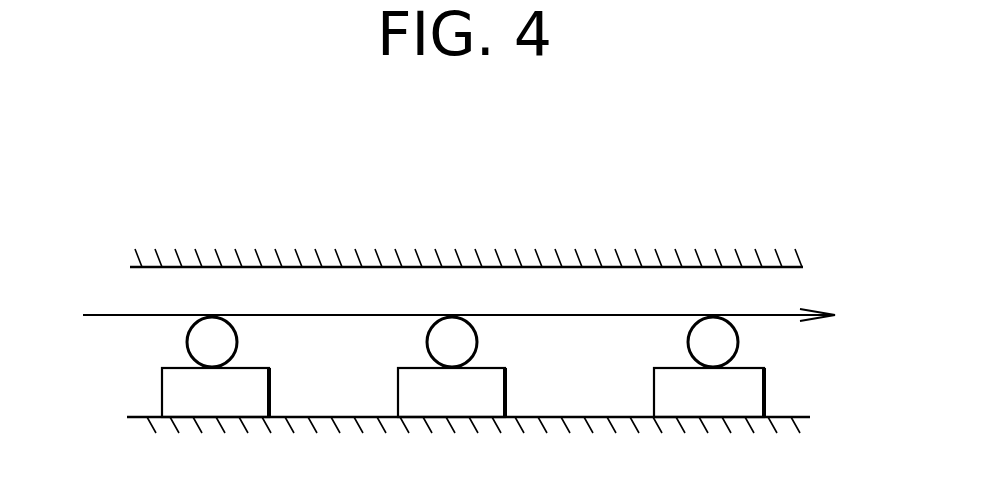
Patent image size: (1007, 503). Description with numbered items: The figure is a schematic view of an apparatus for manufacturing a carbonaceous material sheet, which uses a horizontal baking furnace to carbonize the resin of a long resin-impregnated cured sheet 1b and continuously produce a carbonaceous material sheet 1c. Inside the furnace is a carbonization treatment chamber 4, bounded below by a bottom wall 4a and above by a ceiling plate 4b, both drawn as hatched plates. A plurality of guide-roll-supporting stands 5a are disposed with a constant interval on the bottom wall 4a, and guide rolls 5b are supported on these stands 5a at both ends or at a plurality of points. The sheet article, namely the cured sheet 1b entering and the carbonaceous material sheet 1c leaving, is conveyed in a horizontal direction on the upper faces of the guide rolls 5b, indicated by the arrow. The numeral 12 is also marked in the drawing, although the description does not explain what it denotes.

The long resin-impregnated cured sheet 1b is at (120, 315).
The carbonaceous material sheet 1c is at (780, 318).
The carbonization treatment chamber 4 is at (503, 312).
The bottom wall 4a is at (775, 416).
The ceiling plate 4b is at (765, 268).
The guide-roll-supporting stand 5a is at (270, 384).
The guide roll 5b is at (188, 333).
The gap 12 is at (545, 230).